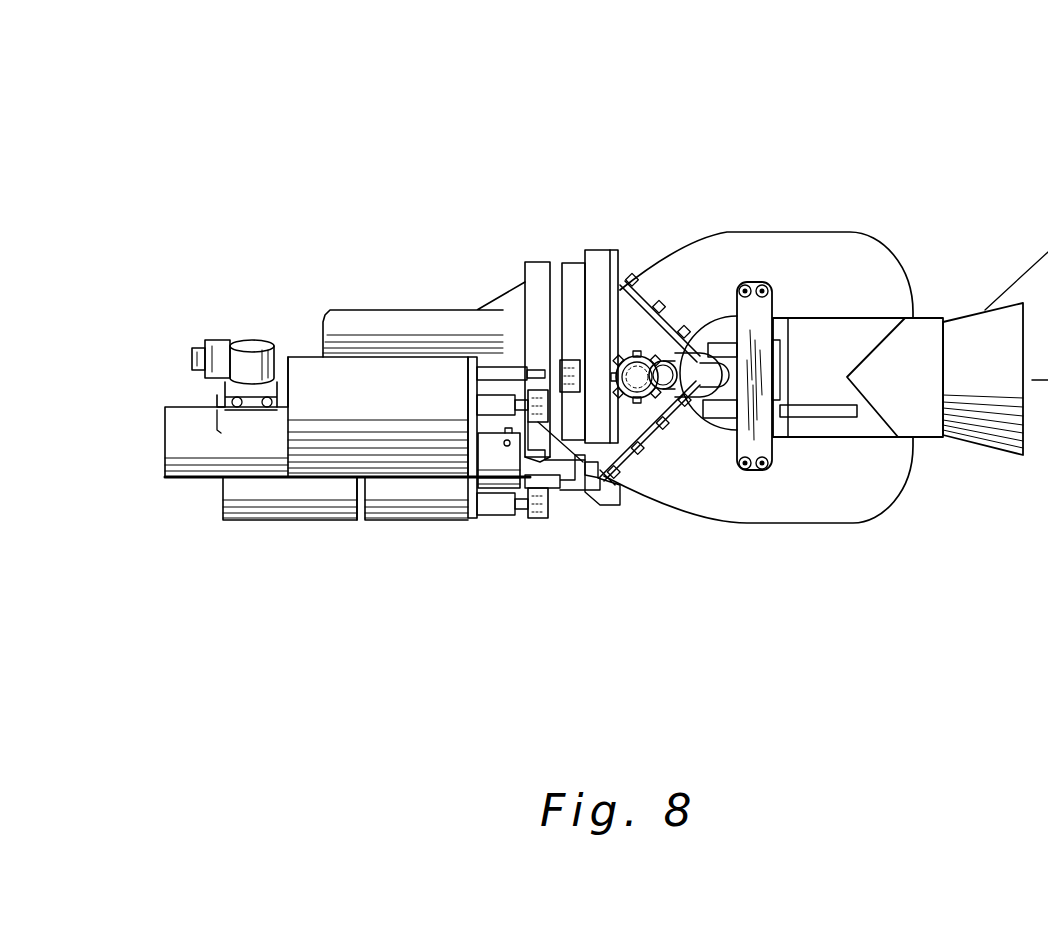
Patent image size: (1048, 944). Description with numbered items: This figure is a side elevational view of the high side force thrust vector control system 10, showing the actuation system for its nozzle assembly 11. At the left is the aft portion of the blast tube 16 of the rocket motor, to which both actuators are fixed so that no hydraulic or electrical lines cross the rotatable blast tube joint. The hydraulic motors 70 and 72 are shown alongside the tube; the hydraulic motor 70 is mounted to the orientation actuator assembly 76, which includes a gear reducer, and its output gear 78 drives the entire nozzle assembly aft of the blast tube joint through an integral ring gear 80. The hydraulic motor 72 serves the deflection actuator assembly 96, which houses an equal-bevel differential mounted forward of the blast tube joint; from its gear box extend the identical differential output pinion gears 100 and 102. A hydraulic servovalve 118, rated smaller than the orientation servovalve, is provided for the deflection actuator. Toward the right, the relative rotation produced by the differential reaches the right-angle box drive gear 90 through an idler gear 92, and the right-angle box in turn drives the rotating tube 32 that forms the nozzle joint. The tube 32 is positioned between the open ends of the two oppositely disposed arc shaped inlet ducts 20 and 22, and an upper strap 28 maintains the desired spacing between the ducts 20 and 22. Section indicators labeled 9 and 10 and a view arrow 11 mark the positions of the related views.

The section line 9- 9 is at (777, 100).
The high side force thrust vector control system 10 is at (583, 160).
The nozzle assembly 11 is at (504, 360).
The blast tube 16 is at (356, 330).
The inlet duct 20 is at (729, 252).
The inlet duct 22 is at (782, 500).
The upper strap 28 is at (757, 340).
The tube 32 is at (858, 340).
The hydraulic motor 70 is at (283, 495).
The hydraulic motor 72 is at (210, 442).
The orientation actuator assembly 76 is at (408, 493).
The output gear 78 is at (528, 503).
The ring gear 80 is at (547, 482).
The drive gear 90 is at (680, 357).
The idler gear 92 is at (641, 343).
The deflection actuator assembly 96 is at (408, 390).
The differential output pinion gear 100 is at (617, 476).
The differential output pinion gear 102 is at (572, 360).
The hydraulic servovalve 118 is at (252, 352).